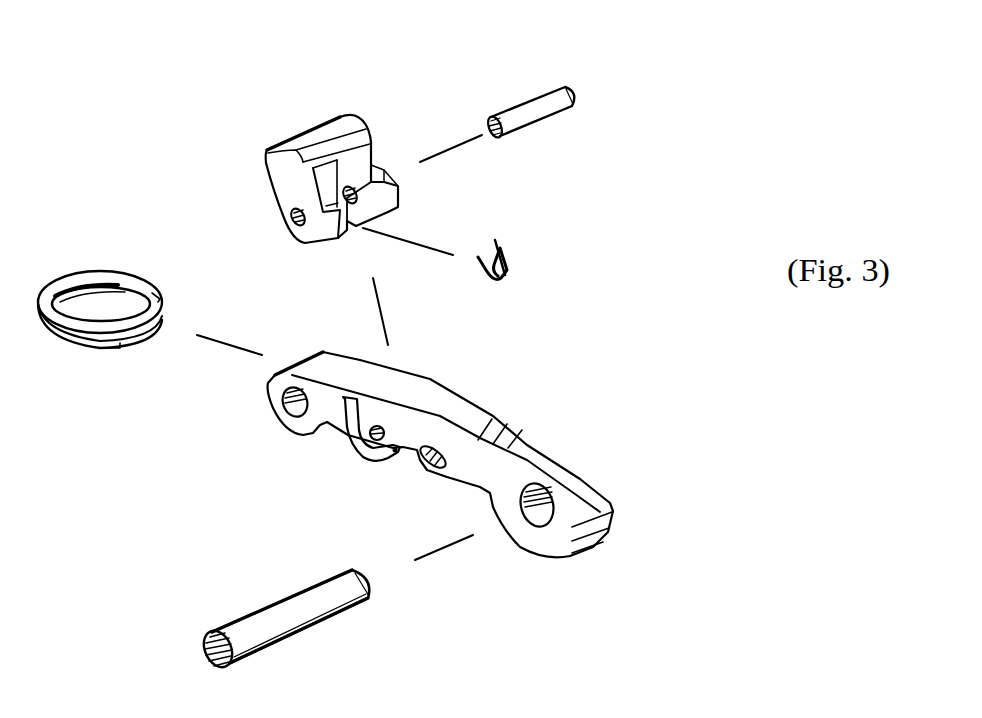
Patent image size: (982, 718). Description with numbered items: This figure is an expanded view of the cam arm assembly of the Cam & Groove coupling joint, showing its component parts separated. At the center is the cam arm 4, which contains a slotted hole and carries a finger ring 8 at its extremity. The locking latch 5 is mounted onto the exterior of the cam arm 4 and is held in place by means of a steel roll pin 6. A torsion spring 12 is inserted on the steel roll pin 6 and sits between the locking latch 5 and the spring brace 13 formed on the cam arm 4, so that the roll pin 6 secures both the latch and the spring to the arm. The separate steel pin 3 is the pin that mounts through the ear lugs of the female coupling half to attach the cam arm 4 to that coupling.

The steel pin 3 is at (262, 623).
The cam arm 4 is at (567, 473).
The locking latch 5 is at (305, 140).
The roll pin 6 is at (557, 97).
The finger ring 8 is at (98, 270).
The torsion spring 12 is at (508, 265).
The spring brace 13 is at (347, 448).